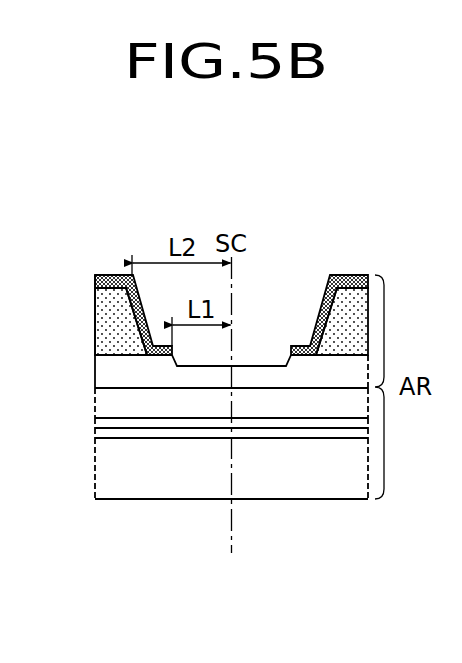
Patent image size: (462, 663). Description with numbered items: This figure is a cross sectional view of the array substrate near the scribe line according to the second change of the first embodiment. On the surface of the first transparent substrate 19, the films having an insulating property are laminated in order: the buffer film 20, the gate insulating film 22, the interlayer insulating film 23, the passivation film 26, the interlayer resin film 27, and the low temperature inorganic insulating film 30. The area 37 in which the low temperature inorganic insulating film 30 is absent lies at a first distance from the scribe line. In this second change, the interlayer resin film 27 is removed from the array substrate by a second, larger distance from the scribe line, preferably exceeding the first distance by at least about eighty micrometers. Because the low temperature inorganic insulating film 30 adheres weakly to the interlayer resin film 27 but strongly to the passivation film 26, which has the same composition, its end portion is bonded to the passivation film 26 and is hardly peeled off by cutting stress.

The first transparent substrate 19 is at (100, 470).
The buffer film 20 is at (100, 435).
The gate insulating film 22 is at (100, 423).
The interlayer insulating film 23 is at (100, 403).
The passivation film 26 is at (100, 366).
The interlayer resin film 27 is at (100, 313).
The low temperature inorganic insulating film 30 is at (100, 283).
The area in which the low temperature inorganic insulating film is absent 37 is at (258, 356).